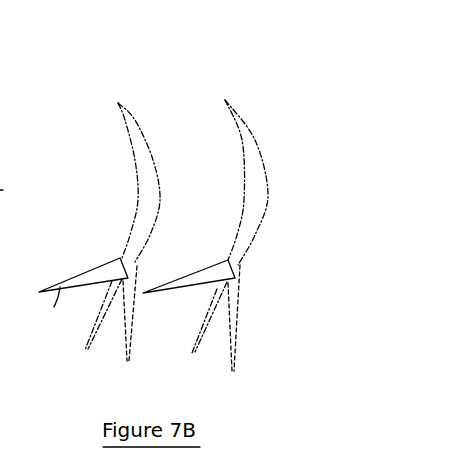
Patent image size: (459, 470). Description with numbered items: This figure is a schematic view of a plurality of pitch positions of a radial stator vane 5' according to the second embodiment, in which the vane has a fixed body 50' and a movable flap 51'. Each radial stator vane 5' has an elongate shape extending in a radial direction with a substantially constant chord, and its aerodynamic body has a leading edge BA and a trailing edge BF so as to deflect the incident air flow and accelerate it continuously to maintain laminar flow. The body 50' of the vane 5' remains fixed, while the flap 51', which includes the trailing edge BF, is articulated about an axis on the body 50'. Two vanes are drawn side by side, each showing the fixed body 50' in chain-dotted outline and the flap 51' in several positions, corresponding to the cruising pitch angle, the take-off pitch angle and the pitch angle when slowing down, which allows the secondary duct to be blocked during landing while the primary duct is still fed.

The radial stator vane 5' is at (197, 150).
The fixed body 50' is at (197, 182).
The movable flap 51' is at (162, 268).
The leading edge BA is at (118, 103).
The trailing edge BF is at (39, 292).